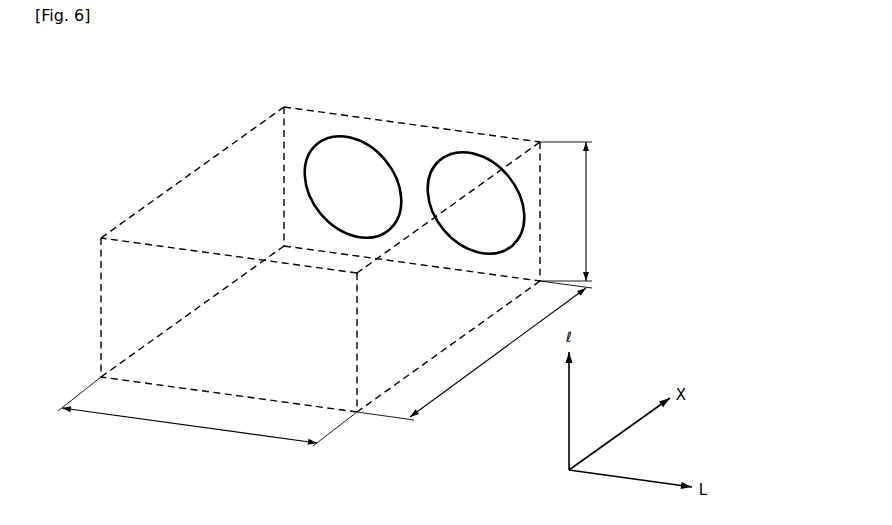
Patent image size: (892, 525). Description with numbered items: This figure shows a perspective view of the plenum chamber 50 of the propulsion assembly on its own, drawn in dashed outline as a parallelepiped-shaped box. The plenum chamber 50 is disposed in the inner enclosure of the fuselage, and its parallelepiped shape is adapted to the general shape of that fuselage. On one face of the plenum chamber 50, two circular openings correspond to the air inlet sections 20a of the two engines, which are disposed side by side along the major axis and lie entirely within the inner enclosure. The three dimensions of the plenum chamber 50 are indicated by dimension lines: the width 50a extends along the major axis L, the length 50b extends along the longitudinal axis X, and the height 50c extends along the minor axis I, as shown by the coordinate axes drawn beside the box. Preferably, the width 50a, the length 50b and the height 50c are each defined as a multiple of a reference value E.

The plenum chamber 50 is at (196, 121).
The air inlet section 20a is at (354, 152).
The width 50a is at (207, 414).
The length 50b is at (474, 350).
The height 50c is at (581, 211).